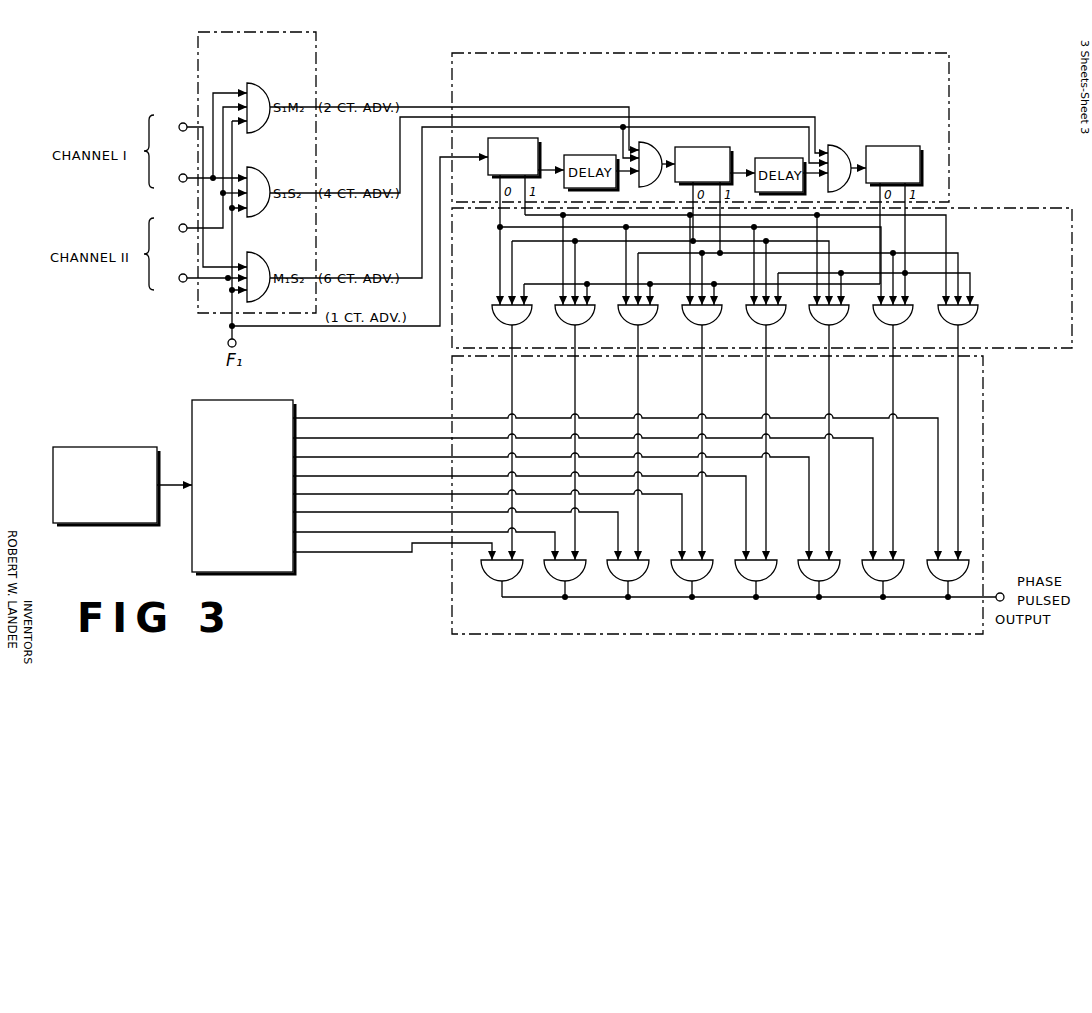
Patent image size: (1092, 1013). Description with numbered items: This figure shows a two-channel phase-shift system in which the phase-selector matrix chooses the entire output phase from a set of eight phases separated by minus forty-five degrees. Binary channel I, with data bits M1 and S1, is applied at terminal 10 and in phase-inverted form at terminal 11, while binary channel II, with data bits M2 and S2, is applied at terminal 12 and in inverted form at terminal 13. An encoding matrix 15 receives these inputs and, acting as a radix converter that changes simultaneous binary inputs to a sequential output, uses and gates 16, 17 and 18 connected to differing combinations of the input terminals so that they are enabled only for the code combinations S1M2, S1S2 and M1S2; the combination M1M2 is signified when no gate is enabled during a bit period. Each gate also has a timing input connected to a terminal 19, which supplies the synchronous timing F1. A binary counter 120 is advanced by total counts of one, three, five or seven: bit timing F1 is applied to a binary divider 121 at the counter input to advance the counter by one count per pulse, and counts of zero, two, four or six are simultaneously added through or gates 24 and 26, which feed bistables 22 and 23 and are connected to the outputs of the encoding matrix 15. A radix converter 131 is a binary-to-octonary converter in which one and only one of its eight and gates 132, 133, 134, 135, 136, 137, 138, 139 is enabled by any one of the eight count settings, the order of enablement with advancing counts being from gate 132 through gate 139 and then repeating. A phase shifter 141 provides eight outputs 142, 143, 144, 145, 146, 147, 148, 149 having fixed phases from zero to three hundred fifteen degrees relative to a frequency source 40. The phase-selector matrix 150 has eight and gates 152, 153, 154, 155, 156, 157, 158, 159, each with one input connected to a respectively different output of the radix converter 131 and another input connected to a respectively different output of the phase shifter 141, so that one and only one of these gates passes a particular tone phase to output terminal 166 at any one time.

The terminal 10 is at (183, 123).
The terminal 11 is at (183, 174).
The terminal 12 is at (183, 224).
The terminal 13 is at (183, 274).
The encoding matrix 15 is at (257, 172).
The and gate 16 is at (262, 130).
The and gate 17 is at (262, 214).
The and gate 18 is at (262, 299).
The terminal 19 is at (228, 342).
The bistable 22 is at (731, 149).
The bistable 23 is at (878, 146).
The or gate 24 is at (654, 172).
The or gate 26 is at (844, 175).
The source 40 is at (106, 486).
The binary counter 120 is at (700, 127).
The binary divider 121 is at (540, 141).
The radix converter 131 is at (762, 278).
The and gate 132 is at (496, 319).
The and gate 133 is at (559, 319).
The and gate 134 is at (622, 319).
The and gate 135 is at (686, 319).
The and gate 136 is at (750, 319).
The and gate 137 is at (813, 319).
The and gate 138 is at (877, 319).
The and gate 139 is at (942, 319).
The phase shifter 141 is at (243, 487).
The output 142 is at (365, 538).
The output 143 is at (365, 518).
The output 144 is at (365, 498).
The output 145 is at (365, 480).
The output 146 is at (365, 462).
The output 147 is at (365, 443).
The output 148 is at (365, 424).
The output 149 is at (365, 404).
The phase-selector matrix 150 is at (717, 495).
The and gate 152 is at (490, 570).
The and gate 153 is at (553, 570).
The and gate 154 is at (616, 570).
The and gate 155 is at (680, 570).
The and gate 156 is at (744, 570).
The and gate 157 is at (807, 570).
The and gate 158 is at (871, 570).
The and gate 159 is at (936, 570).
The output terminal 166 is at (1001, 592).